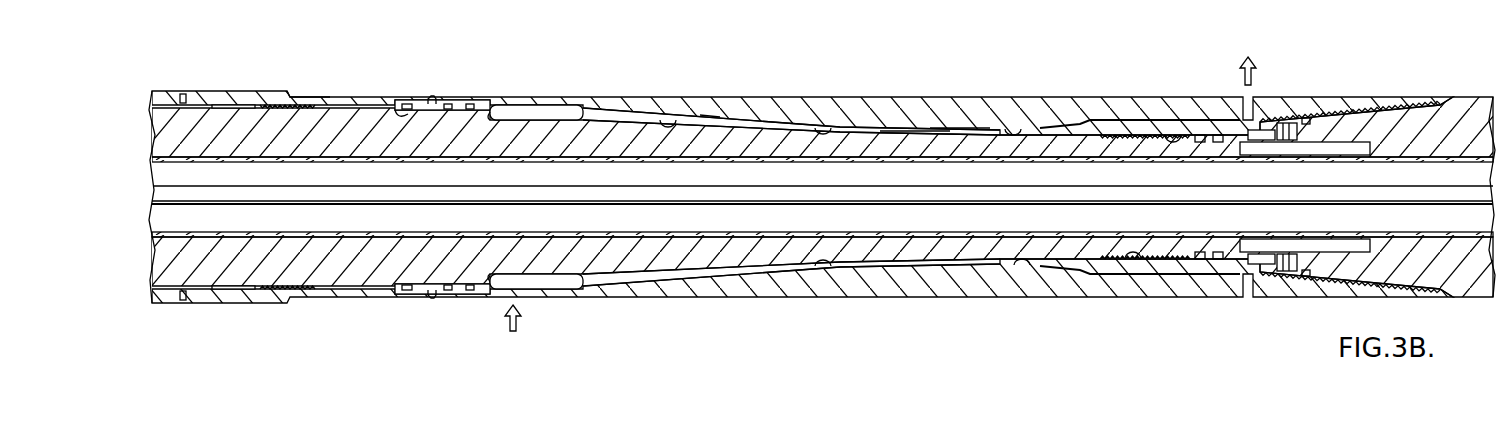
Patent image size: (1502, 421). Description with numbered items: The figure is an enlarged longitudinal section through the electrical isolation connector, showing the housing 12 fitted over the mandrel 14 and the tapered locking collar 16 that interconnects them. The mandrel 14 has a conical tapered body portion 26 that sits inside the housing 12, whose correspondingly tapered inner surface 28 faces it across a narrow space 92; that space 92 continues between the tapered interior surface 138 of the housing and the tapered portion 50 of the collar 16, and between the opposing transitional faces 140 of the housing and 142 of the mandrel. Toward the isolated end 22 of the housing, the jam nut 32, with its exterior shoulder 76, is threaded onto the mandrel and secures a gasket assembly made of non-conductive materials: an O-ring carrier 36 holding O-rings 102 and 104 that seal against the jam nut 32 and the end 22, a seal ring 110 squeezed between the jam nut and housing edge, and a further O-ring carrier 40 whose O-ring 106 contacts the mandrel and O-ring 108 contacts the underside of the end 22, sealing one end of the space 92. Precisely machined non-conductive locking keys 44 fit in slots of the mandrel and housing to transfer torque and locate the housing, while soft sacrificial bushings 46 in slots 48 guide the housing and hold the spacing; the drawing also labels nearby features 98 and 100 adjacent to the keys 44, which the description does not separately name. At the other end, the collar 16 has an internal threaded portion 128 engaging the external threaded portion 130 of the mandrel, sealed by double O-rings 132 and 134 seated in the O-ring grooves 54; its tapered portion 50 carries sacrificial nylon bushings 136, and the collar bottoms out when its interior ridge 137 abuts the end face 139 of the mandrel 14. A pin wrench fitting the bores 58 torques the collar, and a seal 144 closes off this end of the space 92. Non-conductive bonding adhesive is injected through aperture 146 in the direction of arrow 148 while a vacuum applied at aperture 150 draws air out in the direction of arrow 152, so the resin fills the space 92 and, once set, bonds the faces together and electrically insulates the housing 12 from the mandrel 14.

The housing 12 is at (903, 292).
The mandrel 14 is at (662, 256).
The tapered locking collar 16 is at (1142, 128).
The isolated end of the housing 22 is at (430, 300).
The conical tapered body portion of the mandrel 26 is at (710, 112).
The conically tapered inner surface of the housing 28 is at (760, 122).
The jam nut 32 is at (270, 84).
The O-ring carrier 36 is at (395, 118).
The O-ring carrier 40 is at (463, 302).
The locking keys 44 is at (533, 112).
The sacrificial bushings 46 is at (827, 125).
The slots 48 is at (823, 263).
The tapered portion of the collar 50 is at (1015, 125).
The O-ring grooves 54 is at (1183, 248).
The bores 58 is at (1290, 118).
The shoulder of the jam nut 76 is at (327, 93).
The space 92 is at (668, 122).
The shoulder 98 is at (590, 105).
The chamber end 100 is at (488, 124).
The O-ring 102 is at (460, 108).
The O-ring 104 is at (405, 298).
The O-ring 106 is at (485, 118).
The O-ring 108 is at (520, 342).
The seal ring 110 is at (428, 96).
The internal threaded portion of the collar 128 is at (1133, 257).
The external threaded portion of the mandrel 130 is at (1173, 137).
The O-ring 132 is at (1200, 140).
The O-ring 134 is at (1218, 140).
The sacrificial nylon bushings 136 is at (1070, 128).
The interior ridge 137 is at (1233, 256).
The tapered interior surface 138 is at (1022, 262).
The end face of the mandrel 139 is at (1227, 253).
The transitional face of the housing 140 is at (910, 130).
The transitional face of the mandrel 142 is at (942, 130).
The seal 144 is at (1270, 273).
The aperture 146 is at (518, 298).
The arrow 148 is at (530, 300).
The aperture 150 is at (1262, 95).
The arrow 152 is at (1257, 87).